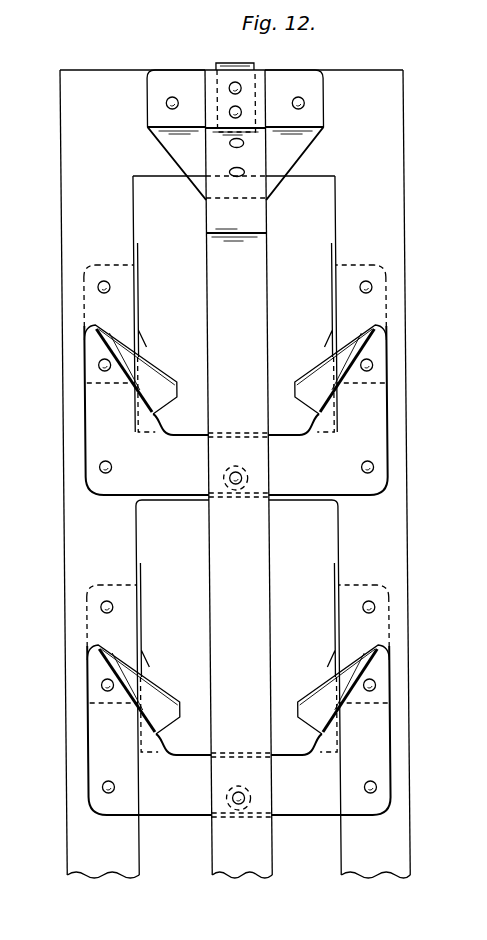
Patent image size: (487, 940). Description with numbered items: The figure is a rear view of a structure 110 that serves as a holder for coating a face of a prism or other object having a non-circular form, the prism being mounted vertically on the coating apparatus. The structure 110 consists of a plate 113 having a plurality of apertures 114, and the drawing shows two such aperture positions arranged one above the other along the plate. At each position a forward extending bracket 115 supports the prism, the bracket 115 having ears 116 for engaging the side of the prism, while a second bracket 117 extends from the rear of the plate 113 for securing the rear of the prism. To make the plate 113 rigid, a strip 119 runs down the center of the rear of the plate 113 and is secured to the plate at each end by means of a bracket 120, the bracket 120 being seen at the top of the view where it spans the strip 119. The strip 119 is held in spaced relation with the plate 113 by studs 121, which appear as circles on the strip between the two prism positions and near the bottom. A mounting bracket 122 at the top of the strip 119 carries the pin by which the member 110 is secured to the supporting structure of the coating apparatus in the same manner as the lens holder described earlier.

The structure 110 is at (422, 97).
The plate 113 is at (73, 220).
The apertures 114 is at (147, 188).
The forward extending bracket 115 is at (137, 272).
The ears 116 is at (142, 350).
The second bracket 117 is at (99, 422).
The strip 119 is at (244, 547).
The bracket 120 is at (157, 89).
The studs 121 is at (238, 476).
The mounting bracket 122 is at (253, 62).